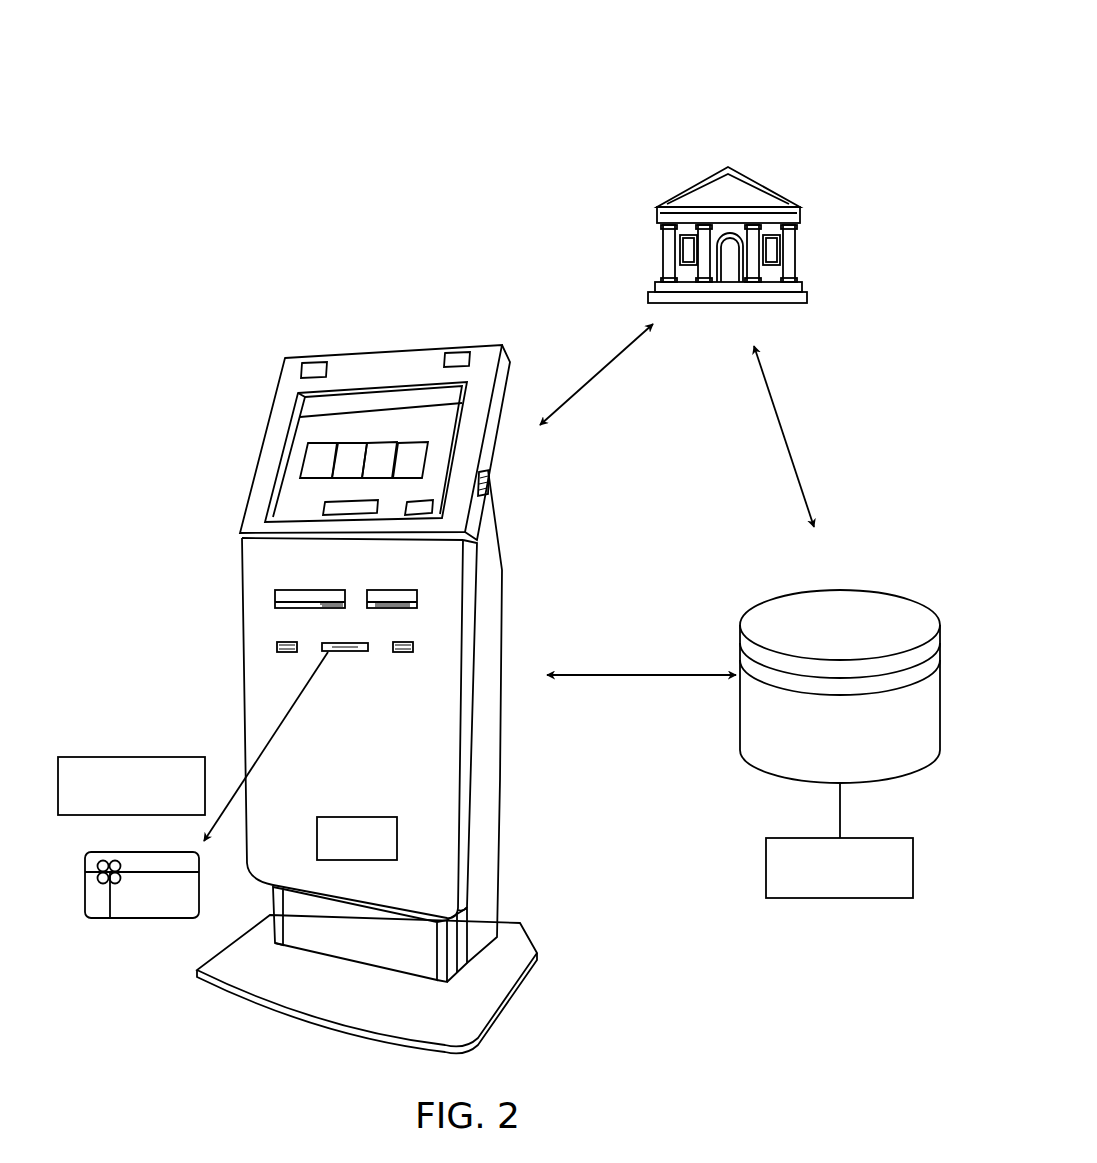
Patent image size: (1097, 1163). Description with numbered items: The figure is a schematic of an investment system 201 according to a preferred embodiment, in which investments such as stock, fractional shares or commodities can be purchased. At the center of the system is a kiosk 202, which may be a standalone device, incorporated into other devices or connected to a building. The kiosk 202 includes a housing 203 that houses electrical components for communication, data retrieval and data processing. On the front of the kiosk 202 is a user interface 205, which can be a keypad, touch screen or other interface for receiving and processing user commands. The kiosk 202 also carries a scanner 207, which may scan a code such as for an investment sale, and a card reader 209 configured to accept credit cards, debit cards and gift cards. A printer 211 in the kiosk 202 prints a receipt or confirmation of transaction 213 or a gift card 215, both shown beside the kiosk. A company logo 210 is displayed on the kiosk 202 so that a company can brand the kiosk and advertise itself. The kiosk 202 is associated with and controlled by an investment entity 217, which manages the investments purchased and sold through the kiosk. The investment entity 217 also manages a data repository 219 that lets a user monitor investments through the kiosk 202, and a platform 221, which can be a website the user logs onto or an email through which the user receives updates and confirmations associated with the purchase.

The investment system 201 is at (782, 48).
The kiosk 202 is at (236, 494).
The housing 203 is at (277, 648).
The user interface 205 is at (297, 395).
The scanner 207 is at (275, 598).
The card reader 209 is at (417, 598).
The company logo 210 is at (397, 838).
The printer 211 is at (362, 652).
The receipt/confirmation of transaction 213 is at (127, 757).
The gift card 215 is at (128, 920).
The investment entity 217 is at (690, 183).
The data repository 219 is at (848, 590).
The platform 221 is at (766, 863).